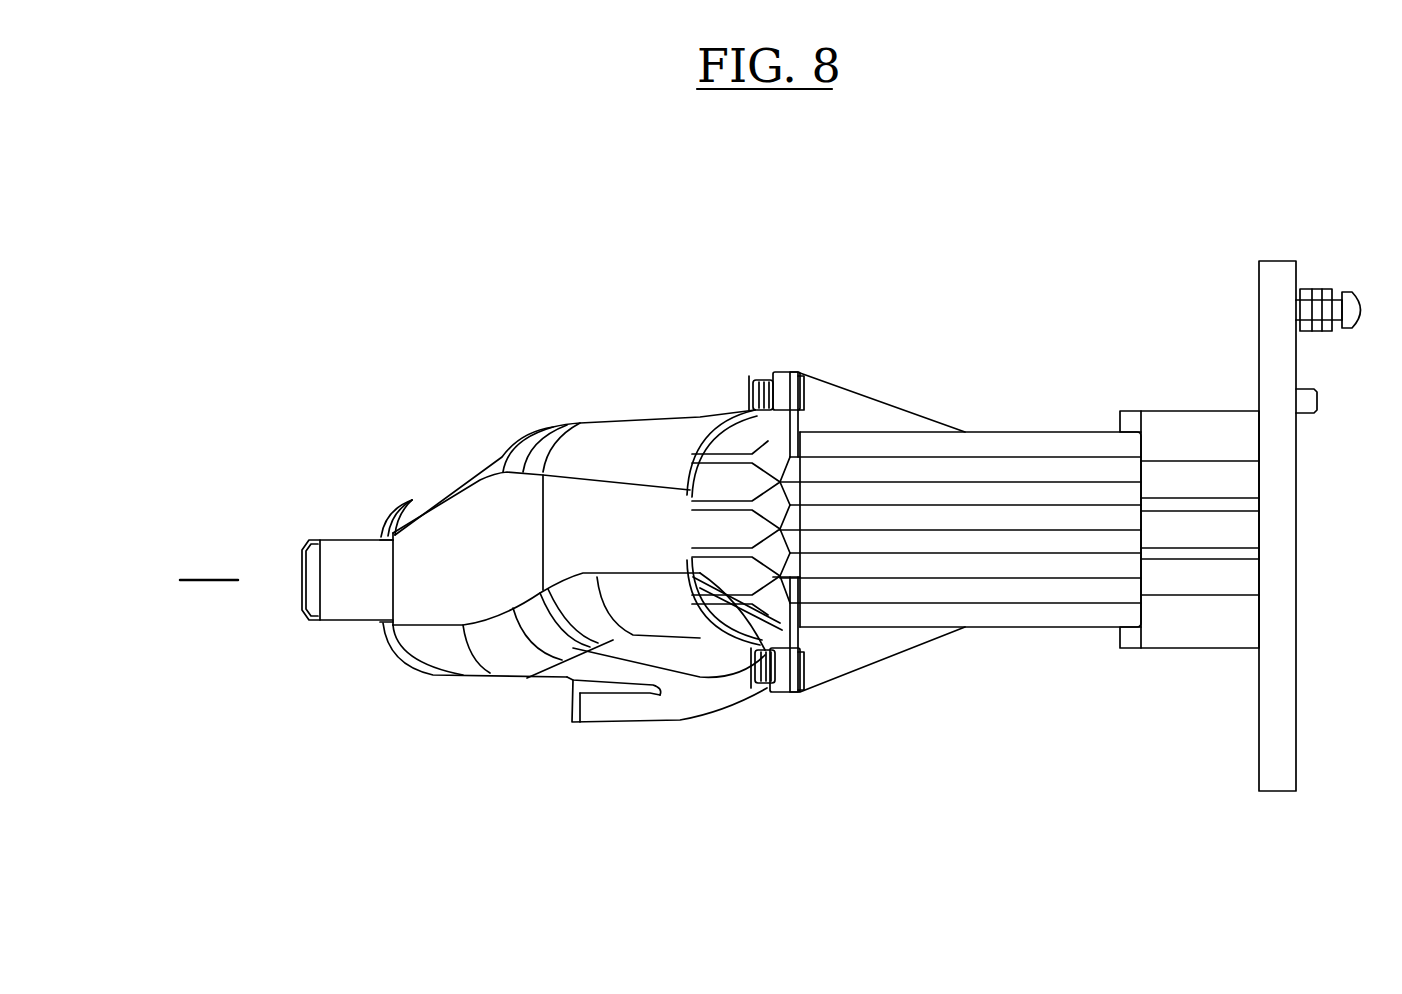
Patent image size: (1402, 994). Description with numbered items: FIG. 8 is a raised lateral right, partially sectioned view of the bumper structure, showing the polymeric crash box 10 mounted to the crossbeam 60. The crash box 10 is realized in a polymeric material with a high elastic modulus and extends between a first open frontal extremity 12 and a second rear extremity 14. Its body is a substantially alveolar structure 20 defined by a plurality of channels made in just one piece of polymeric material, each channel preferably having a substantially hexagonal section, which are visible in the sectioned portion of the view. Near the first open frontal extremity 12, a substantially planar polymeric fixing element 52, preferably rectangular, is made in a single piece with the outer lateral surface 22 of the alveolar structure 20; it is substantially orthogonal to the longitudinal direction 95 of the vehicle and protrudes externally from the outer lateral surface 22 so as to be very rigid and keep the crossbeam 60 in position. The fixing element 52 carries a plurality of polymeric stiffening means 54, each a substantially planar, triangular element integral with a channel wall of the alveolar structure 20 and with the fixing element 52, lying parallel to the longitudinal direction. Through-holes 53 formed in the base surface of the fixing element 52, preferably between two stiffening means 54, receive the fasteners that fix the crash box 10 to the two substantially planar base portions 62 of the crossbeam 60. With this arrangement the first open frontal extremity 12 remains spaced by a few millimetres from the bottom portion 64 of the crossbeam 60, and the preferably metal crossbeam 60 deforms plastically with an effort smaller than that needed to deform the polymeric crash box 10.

The crash box 10 is at (1055, 252).
The first open frontal extremity 12 is at (812, 610).
The second rear extremity 14 is at (1105, 612).
The alveolar structure 20 is at (720, 502).
The outer lateral surface 22 is at (1021, 446).
The planar polymeric fixing element 52 is at (798, 371).
The through-holes 53 is at (762, 383).
The polymeric stiffening means 54 is at (886, 415).
The crossbeam 60 is at (433, 462).
The planar base portions 62 is at (787, 383).
The bottom portion 64 is at (727, 615).
The longitudinal direction 95 is at (200, 573).